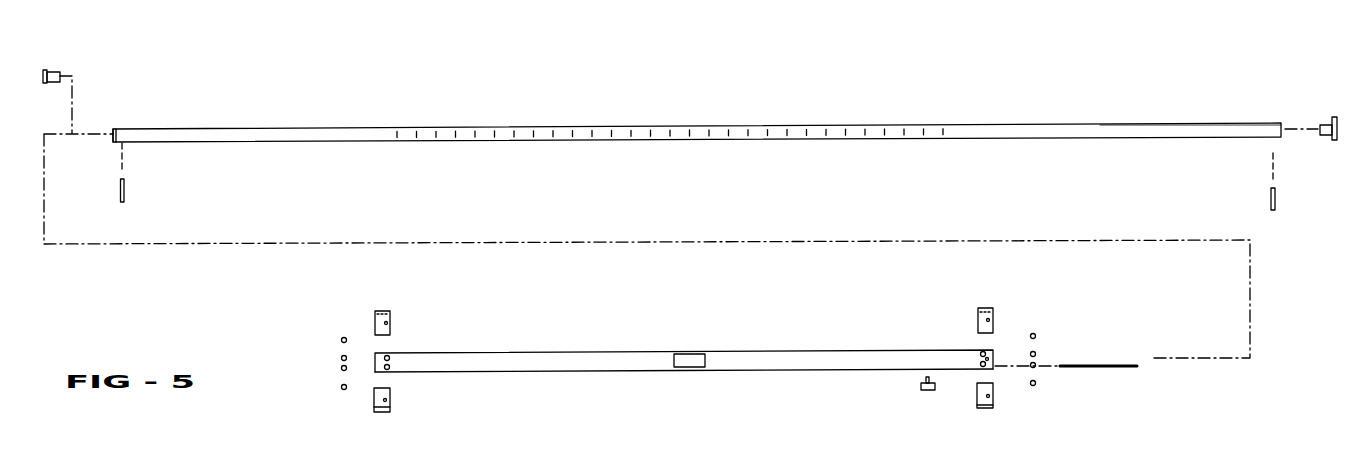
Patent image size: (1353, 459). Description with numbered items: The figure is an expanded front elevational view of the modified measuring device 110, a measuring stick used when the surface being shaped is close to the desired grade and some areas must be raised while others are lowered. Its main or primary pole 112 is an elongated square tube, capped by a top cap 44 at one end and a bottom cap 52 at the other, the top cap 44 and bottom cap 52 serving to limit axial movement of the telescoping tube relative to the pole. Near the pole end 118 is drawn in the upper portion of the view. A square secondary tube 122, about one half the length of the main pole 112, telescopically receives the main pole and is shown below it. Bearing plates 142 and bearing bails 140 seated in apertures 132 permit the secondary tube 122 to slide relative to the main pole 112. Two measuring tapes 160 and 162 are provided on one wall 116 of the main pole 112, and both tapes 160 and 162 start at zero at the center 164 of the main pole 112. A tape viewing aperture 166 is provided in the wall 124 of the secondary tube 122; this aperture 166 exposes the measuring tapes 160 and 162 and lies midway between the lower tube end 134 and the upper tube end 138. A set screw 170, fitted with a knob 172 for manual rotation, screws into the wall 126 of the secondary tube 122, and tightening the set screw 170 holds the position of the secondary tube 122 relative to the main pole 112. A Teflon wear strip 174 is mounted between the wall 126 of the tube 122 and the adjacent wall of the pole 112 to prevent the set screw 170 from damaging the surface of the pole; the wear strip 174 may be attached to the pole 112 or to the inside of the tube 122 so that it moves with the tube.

The top cap 44 is at (1335, 117).
The bottom cap 52 is at (47, 70).
The modified measuring device 110 is at (373, 112).
The main pole 112 is at (1043, 126).
The wall 116 is at (1143, 132).
The end cap 118 is at (113, 129).
The secondary tube 122 is at (798, 350).
The wall 124 is at (587, 366).
The wall 126 is at (763, 372).
The apertures 132 is at (393, 367).
The lower tube end 134 is at (373, 362).
The upper tube end 138 is at (996, 354).
The bearing bails 140 is at (341, 387).
The bearing plates 142 is at (392, 332).
The measuring tape 160 is at (900, 132).
The measuring tape 162 is at (475, 135).
The center 164 is at (688, 136).
The tape viewing aperture 166 is at (695, 356).
The set screw 170 is at (921, 379).
The knob 172 is at (921, 388).
The Teflon wear strip 174 is at (1088, 366).